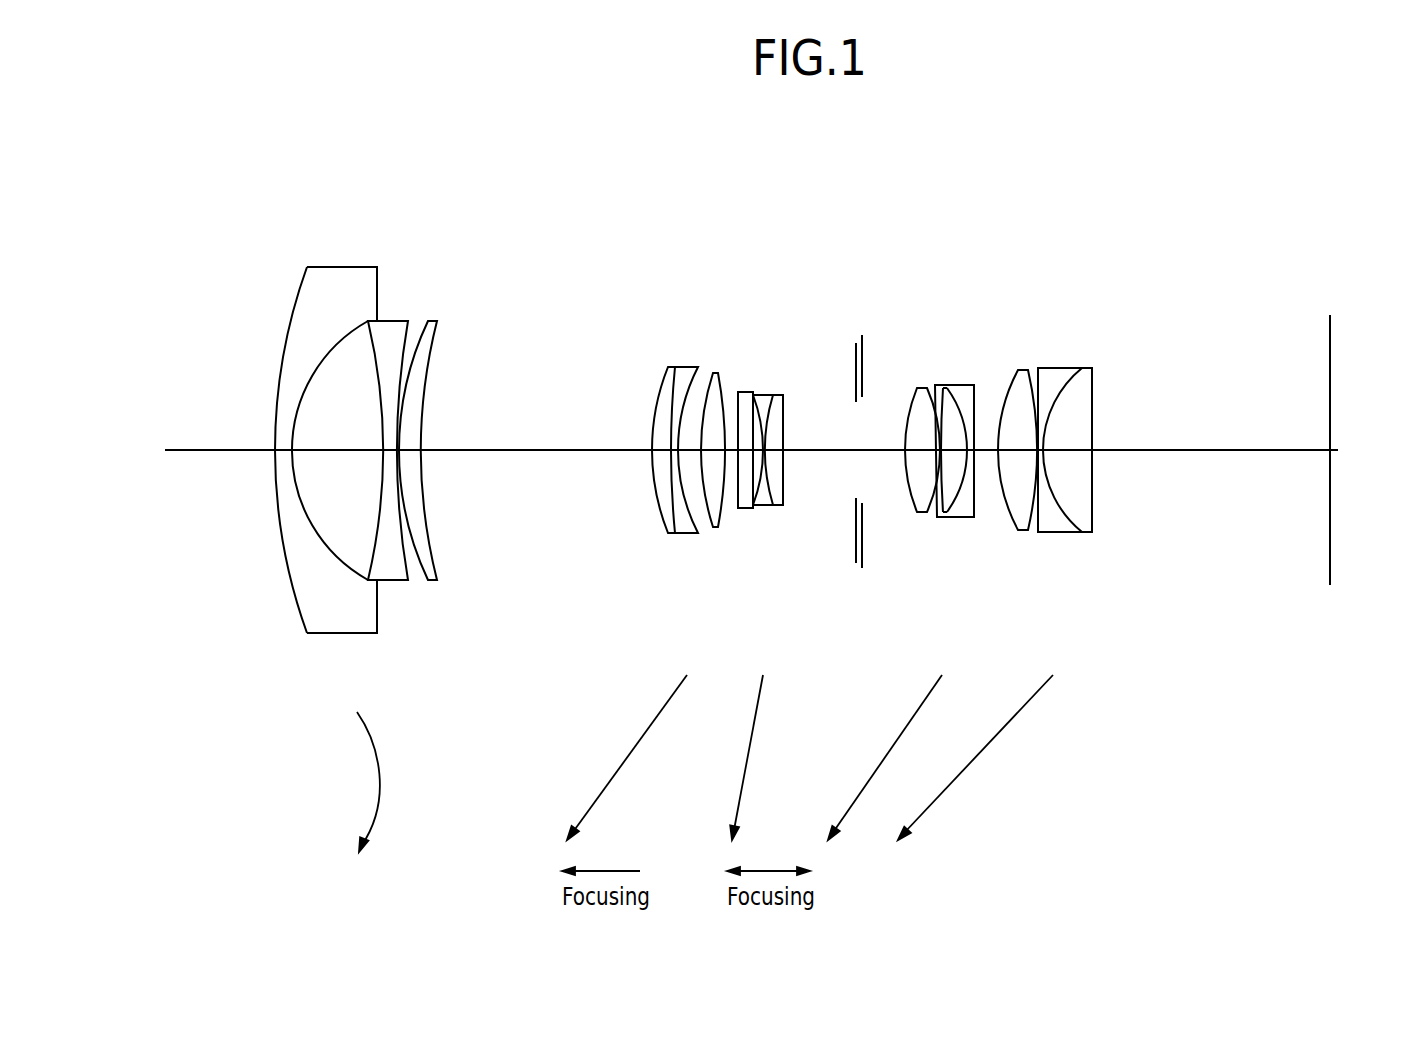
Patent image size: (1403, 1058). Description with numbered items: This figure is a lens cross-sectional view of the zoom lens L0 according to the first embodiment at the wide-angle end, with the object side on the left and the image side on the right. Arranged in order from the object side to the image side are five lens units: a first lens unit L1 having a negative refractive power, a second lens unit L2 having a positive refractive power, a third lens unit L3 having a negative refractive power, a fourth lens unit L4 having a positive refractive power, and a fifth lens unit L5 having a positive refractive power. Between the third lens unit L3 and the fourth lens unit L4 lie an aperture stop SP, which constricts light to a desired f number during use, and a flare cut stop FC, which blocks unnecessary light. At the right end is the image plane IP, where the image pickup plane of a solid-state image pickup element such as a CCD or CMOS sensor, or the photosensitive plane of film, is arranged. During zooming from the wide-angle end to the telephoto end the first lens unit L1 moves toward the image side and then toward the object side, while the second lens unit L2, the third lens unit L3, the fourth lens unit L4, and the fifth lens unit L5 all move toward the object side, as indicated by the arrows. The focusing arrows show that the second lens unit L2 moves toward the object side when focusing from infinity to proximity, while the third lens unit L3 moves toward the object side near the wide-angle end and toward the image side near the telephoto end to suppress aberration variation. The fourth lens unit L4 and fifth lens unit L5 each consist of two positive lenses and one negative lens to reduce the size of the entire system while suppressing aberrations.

The zoom lens L0 is at (1122, 218).
The first lens unit L1 is at (440, 647).
The second lens unit L2 is at (721, 612).
The third lens unit L3 is at (792, 612).
The fourth lens unit L4 is at (982, 612).
The fifth lens unit L5 is at (1110, 612).
The aperture stop SP is at (853, 363).
The flare cut stop FC is at (864, 352).
The image plane IP is at (1330, 341).